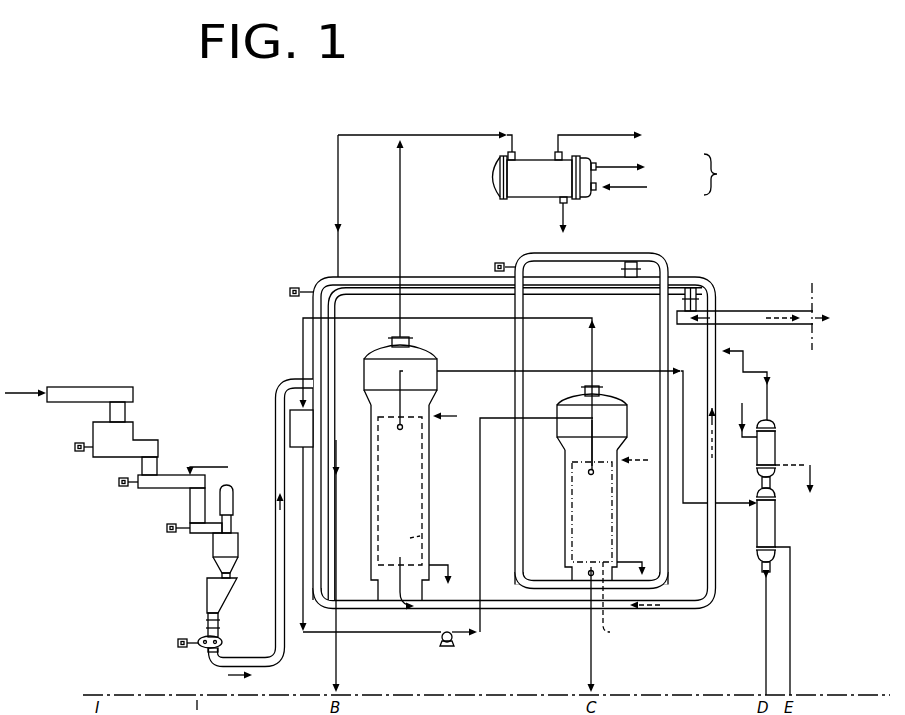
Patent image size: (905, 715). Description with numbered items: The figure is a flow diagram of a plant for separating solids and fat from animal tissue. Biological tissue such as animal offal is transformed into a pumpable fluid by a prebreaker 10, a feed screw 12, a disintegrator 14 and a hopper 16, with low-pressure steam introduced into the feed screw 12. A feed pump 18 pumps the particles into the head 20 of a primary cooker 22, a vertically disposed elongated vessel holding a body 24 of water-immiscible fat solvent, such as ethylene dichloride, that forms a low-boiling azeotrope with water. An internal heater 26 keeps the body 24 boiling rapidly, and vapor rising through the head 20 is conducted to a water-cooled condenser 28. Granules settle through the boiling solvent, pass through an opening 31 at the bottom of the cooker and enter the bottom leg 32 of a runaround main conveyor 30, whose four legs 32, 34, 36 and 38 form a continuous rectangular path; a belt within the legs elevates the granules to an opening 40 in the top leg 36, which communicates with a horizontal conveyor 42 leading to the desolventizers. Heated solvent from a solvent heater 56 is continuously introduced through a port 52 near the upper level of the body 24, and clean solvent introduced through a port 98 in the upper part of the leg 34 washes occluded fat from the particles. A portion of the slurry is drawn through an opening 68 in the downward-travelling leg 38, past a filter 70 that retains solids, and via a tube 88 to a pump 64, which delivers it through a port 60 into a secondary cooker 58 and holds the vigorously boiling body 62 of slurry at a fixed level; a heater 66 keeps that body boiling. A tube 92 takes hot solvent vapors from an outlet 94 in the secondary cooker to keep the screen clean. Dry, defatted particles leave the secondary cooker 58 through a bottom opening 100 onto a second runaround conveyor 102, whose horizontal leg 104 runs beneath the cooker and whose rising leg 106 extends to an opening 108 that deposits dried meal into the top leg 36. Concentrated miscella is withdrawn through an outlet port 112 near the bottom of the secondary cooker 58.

The prebreaker 10 is at (137, 428).
The feed screw 12 is at (162, 475).
The disintegrator 14 is at (212, 545).
The hopper 16 is at (207, 590).
The feed pump 18 is at (223, 642).
The head 20 is at (437, 362).
The primary cooker 22 is at (436, 514).
The body of solvent 24 is at (422, 530).
The internal heater 26 is at (423, 483).
The condenser 28 is at (530, 160).
The runaround main conveyor 30 is at (426, 278).
The opening 31 is at (395, 601).
The bottom leg 32 is at (525, 612).
The leg 34 is at (720, 478).
The top leg 36 is at (456, 288).
The leg 38 is at (283, 405).
The opening 40 is at (690, 287).
The horizontal conveyor 42 is at (778, 299).
The port 52 is at (397, 428).
The solvent heater 56 is at (775, 440).
The secondary cooker 58 is at (560, 492).
The port 60 is at (588, 472).
The body of slurry 62 is at (578, 508).
The pump 64 is at (443, 641).
The heater 66 is at (616, 533).
The opening 68 is at (314, 428).
The filter 70 is at (290, 435).
The tube 88 is at (303, 632).
The tube 92 is at (303, 348).
The outlet 94 is at (586, 387).
The port 98 is at (727, 348).
The opening 100 is at (612, 634).
The second runaround conveyor 102 is at (664, 256).
The horizontal leg 104 is at (565, 586).
The rising leg 106 is at (619, 506).
The opening 108 is at (631, 262).
The outlet port 112 is at (589, 571).